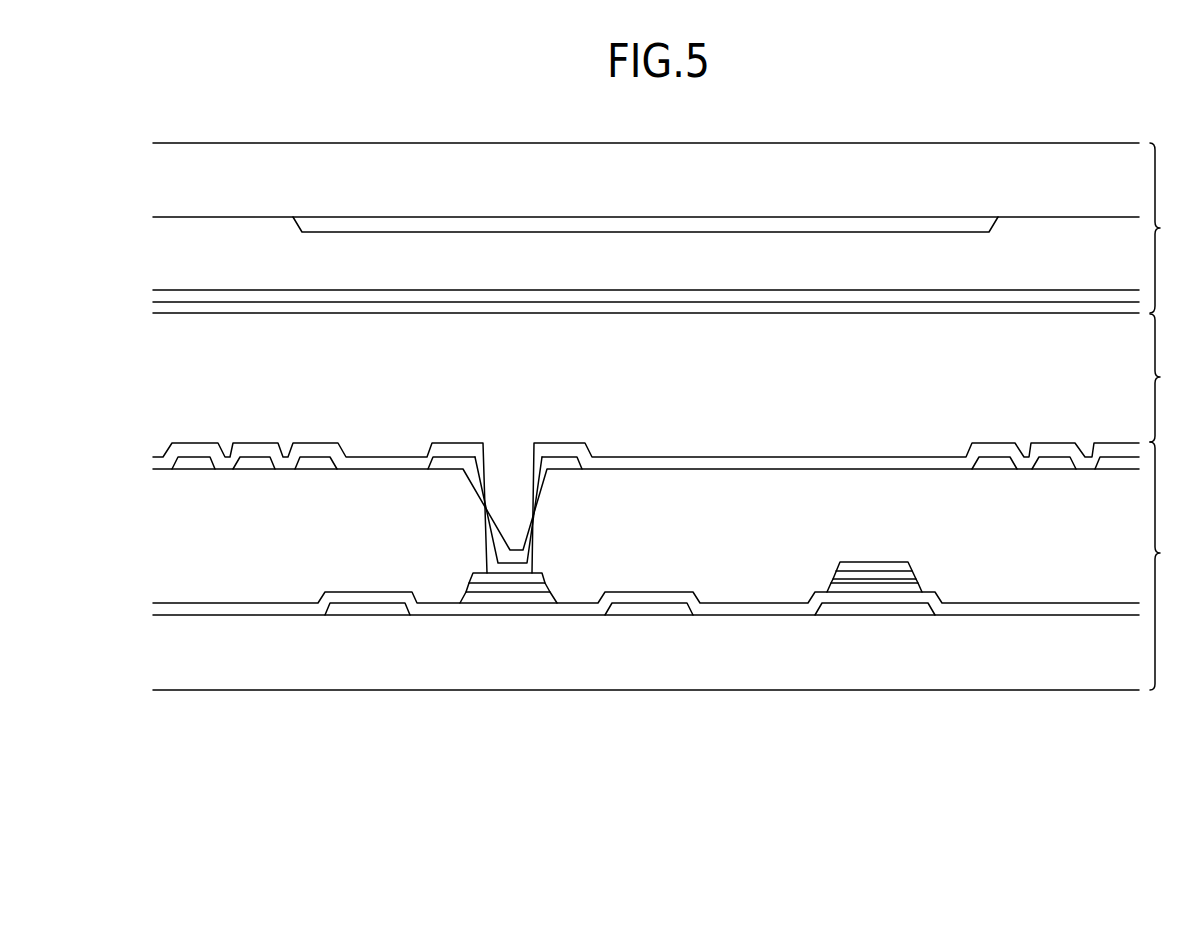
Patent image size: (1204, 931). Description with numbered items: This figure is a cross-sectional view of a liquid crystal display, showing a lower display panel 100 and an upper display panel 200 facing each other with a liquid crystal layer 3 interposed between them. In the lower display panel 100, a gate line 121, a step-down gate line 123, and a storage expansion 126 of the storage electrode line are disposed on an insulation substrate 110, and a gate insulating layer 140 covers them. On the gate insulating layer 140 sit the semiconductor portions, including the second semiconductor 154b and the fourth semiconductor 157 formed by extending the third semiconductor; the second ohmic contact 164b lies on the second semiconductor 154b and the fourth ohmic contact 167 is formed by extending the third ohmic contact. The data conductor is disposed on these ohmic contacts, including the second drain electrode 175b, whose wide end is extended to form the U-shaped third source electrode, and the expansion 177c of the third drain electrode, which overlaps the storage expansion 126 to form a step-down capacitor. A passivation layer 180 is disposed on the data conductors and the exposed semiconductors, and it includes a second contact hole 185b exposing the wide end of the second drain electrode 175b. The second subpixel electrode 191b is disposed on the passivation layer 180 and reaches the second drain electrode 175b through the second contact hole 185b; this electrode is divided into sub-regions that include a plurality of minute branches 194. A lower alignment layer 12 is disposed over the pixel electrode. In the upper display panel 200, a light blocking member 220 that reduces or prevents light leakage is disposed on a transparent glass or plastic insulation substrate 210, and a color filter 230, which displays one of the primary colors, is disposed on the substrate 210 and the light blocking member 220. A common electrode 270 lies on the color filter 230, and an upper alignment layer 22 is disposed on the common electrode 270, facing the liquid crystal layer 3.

The liquid crystal layer 3 is at (1165, 378).
The lower alignment layer 12 is at (731, 462).
The upper alignment layer 22 is at (1029, 309).
The lower display panel 100 is at (1176, 566).
The insulation substrate 110 is at (1037, 665).
The gate line 121 is at (667, 610).
The step-down gate line 123 is at (367, 610).
The storage expansion 126 is at (838, 608).
The gate insulating layer 140 is at (758, 610).
The second semiconductor 154b is at (485, 597).
The fourth semiconductor 157 is at (868, 585).
The second ohmic contact 164b is at (503, 588).
The fourth ohmic contact 167 is at (883, 577).
The second drain electrode 175b is at (523, 580).
The expansion of the third drain electrode 177c is at (895, 568).
The passivation layer 180 is at (233, 548).
The second contact hole 185b is at (477, 520).
The second subpixel electrode 191b is at (448, 462).
The minute branches 194 is at (256, 462).
The upper display panel 200 is at (1176, 228).
The insulation substrate 210 is at (738, 167).
The light blocking member 220 is at (840, 227).
The color filter 230 is at (933, 253).
The common electrode 270 is at (923, 295).